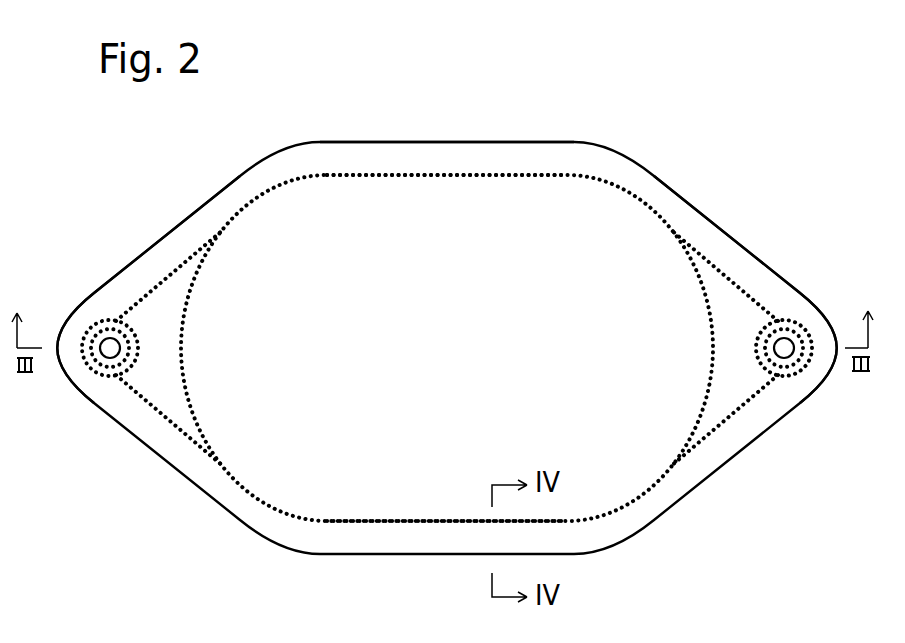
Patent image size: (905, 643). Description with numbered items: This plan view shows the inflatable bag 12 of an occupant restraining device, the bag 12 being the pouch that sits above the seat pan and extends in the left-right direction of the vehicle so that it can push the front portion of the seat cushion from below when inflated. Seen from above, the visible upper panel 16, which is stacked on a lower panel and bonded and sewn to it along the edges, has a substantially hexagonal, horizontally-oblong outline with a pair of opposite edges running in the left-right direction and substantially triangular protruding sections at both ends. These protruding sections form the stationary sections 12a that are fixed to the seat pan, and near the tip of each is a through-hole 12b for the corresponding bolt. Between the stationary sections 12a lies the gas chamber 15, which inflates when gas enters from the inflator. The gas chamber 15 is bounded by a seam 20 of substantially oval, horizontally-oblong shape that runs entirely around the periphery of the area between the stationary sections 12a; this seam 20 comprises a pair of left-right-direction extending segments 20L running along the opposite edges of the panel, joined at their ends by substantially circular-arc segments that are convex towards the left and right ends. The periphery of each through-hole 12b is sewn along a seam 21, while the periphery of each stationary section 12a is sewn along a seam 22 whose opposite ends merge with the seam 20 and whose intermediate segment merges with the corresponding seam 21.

The inflatable bag 12 is at (631, 138).
The stationary section 12a is at (71, 313).
The through-hole 12b is at (71, 388).
The gas chamber 15 is at (377, 370).
The upper panel 16 is at (305, 163).
The seam 20 is at (180, 352).
The left-right-direction extending segment 20L is at (437, 177).
The seam 21 is at (136, 334).
The seam 22 is at (163, 277).